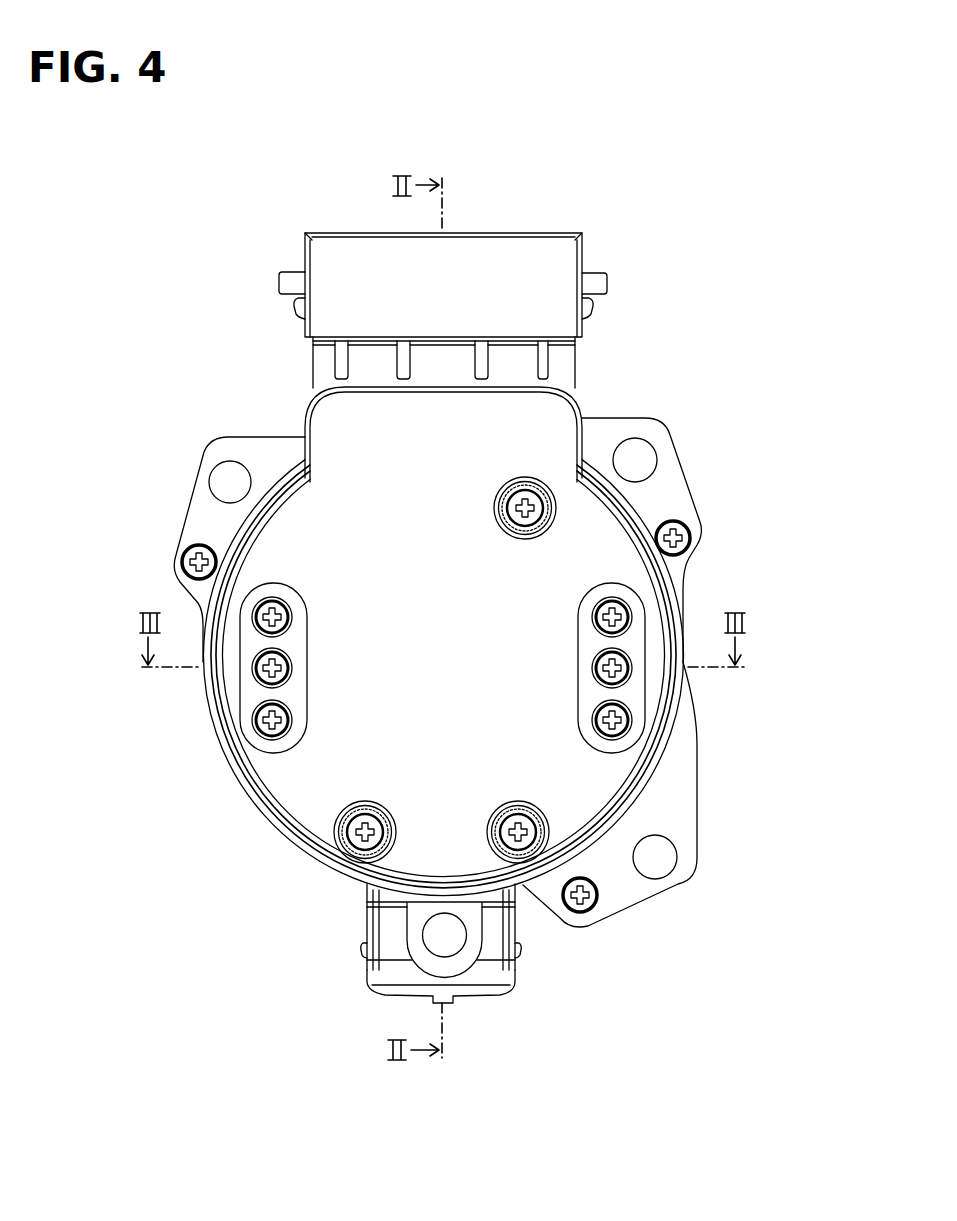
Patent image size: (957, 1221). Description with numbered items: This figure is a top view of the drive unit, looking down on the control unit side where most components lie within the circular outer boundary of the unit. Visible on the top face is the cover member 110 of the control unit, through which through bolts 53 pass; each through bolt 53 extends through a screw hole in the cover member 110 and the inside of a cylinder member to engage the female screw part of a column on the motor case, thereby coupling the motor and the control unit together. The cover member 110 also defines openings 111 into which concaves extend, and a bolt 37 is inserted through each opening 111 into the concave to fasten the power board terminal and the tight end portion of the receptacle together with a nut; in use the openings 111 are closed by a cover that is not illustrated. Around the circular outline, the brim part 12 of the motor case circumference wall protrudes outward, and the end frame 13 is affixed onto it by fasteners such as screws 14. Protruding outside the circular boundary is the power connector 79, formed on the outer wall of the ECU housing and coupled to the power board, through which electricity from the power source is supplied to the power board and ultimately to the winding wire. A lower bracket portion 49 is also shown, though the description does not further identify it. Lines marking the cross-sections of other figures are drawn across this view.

The brim part 12 is at (212, 458).
The end frame 13 is at (678, 470).
The screw 14 is at (180, 562).
The bolt 37 is at (256, 613).
The bottom bracket 49 is at (518, 982).
The through bolt 53 is at (538, 492).
The power connector 79 is at (584, 250).
The cover member 110 is at (530, 413).
The opening 111 is at (274, 742).